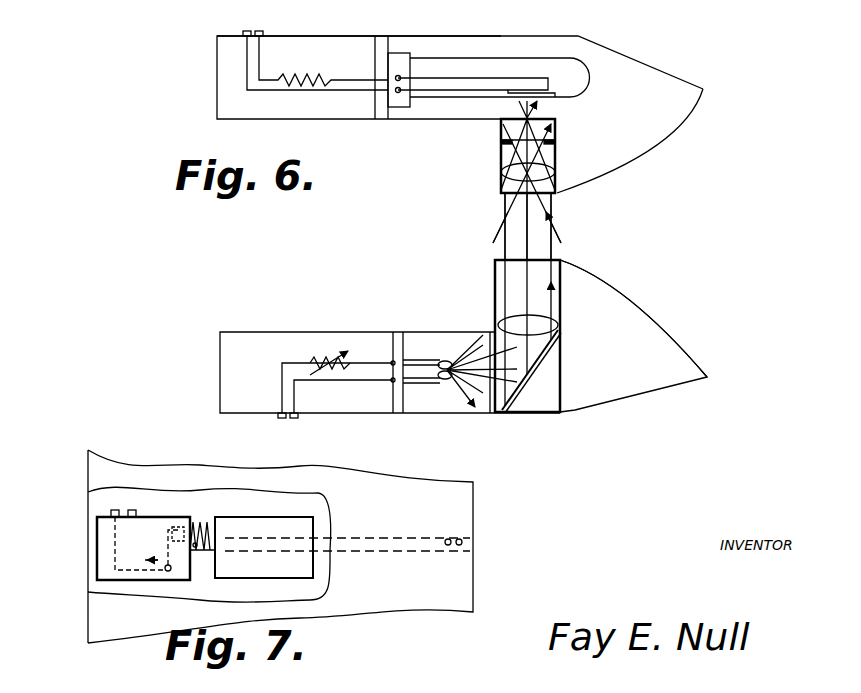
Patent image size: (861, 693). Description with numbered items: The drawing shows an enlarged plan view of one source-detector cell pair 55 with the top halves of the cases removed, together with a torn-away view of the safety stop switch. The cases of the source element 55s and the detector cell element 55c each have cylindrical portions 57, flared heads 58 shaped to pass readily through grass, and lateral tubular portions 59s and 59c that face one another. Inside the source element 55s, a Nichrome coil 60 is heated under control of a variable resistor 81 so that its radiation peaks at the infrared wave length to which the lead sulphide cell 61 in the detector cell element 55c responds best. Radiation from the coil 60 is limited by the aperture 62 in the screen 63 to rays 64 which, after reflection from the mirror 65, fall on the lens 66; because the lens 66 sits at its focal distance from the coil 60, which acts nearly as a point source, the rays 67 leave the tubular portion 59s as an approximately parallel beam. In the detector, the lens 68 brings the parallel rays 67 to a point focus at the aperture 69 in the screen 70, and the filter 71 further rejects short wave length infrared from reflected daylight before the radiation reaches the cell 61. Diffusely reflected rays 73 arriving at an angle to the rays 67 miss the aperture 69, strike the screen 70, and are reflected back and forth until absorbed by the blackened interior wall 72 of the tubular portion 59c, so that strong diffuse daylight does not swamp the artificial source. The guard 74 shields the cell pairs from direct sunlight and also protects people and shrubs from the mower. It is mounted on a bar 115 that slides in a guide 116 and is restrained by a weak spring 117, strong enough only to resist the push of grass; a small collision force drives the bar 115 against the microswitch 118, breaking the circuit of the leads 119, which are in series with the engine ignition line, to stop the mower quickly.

In FIG. 6, the source-detector cell pair 55 is at (636, 245).
In FIG. 6, the detector cell element 55c is at (643, 64).
In FIG. 6, the source element 55s is at (673, 333).
In FIG. 6, the cylindrical portions 57 is at (250, 120).
In FIG. 6, the flared heads 58 is at (663, 129).
In FIG. 6, the lateral tubular portion of detector cell element 59c is at (500, 153).
In FIG. 6, the lateral tubular portion of source element 59s is at (495, 303).
In FIG. 6, the Nichrome coil 60 is at (447, 357).
In FIG. 6, the lead sulphide cell 61 is at (490, 63).
In FIG. 6, the aperture 62 is at (506, 381).
In FIG. 6, the screen 63 is at (501, 399).
In FIG. 6, the rays 64 is at (522, 346).
In FIG. 6, the mirror 65 is at (520, 373).
In FIG. 6, the lens 66 is at (535, 322).
In FIG. 6, the rays 67 is at (535, 216).
In FIG. 6, the lens 68 is at (515, 181).
In FIG. 6, the aperture 69 is at (505, 133).
In FIG. 6, the screen 70 is at (520, 119).
In FIG. 6, the filter 71 is at (538, 150).
In FIG. 6, the blackened interior wall 72 is at (548, 142).
In FIG. 6, the diffusely reflected rays 73 is at (500, 229).
In FIG. 6, the variable resistor 81 is at (318, 358).
In FIG. 7, the guard 74 is at (473, 500).
In FIG. 7, the bar 115 is at (413, 521).
In FIG. 7, the guide 116 is at (305, 569).
In FIG. 7, the weak spring 117 is at (210, 556).
In FIG. 7, the microswitch 118 is at (100, 567).
In FIG. 7, the leads 119 is at (105, 510).